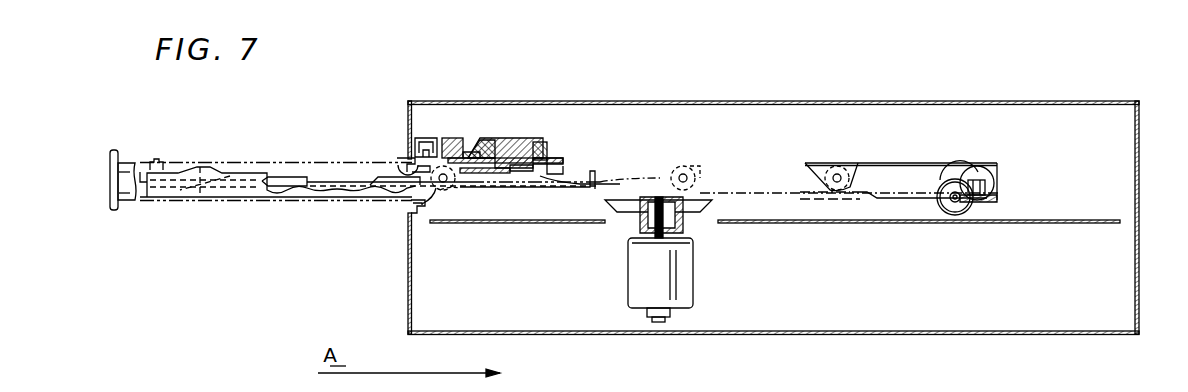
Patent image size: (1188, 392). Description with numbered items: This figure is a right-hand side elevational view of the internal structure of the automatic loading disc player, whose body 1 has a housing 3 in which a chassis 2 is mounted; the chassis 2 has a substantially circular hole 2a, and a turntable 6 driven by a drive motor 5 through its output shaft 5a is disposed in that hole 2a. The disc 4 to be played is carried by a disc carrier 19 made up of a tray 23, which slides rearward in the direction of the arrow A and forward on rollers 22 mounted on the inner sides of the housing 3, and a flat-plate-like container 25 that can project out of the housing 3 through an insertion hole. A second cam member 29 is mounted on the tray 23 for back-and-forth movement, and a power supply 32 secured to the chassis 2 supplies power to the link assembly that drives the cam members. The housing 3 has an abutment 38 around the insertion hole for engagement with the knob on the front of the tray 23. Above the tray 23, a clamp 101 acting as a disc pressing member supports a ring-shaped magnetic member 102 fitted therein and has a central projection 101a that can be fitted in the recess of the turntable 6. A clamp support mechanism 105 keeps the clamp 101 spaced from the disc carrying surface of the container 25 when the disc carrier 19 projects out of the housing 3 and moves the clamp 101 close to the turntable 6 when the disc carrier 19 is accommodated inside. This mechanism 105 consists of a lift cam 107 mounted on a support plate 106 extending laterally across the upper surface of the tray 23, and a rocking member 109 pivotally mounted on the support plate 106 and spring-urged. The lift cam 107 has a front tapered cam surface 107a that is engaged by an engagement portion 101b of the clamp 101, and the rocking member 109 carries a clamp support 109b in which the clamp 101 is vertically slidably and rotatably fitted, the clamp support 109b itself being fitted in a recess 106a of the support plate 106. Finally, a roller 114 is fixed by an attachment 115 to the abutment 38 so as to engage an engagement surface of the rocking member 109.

The body 1 is at (703, 60).
The chassis 2 is at (1072, 226).
The circular hole 2a is at (600, 192).
The housing 3 is at (834, 103).
The disc 4 is at (325, 174).
The drive motor 5 is at (642, 306).
The output shaft 5a is at (660, 238).
The turntable 6 is at (620, 244).
The disc carrier 19 is at (264, 206).
The roller 22 is at (476, 192).
The tray 23 is at (266, 158).
The container 25 is at (300, 176).
The second cam member 29 is at (212, 189).
The power supply 32 is at (1006, 174).
The abutment 38 is at (414, 164).
The clamp 101 is at (512, 144).
The central projection 101a is at (490, 174).
The engagement portion 101b is at (538, 138).
The ring-shaped magnetic member 102 is at (522, 174).
The clamp support mechanism 105 is at (556, 120).
The support plate 106 is at (562, 164).
The recess 106a is at (580, 180).
The lift cam 107 is at (544, 152).
The cam surface 107a is at (474, 158).
The rocking member 109 is at (452, 138).
The clamp support 109b is at (474, 152).
The roller 114 is at (418, 108).
The attachment 115 is at (406, 138).